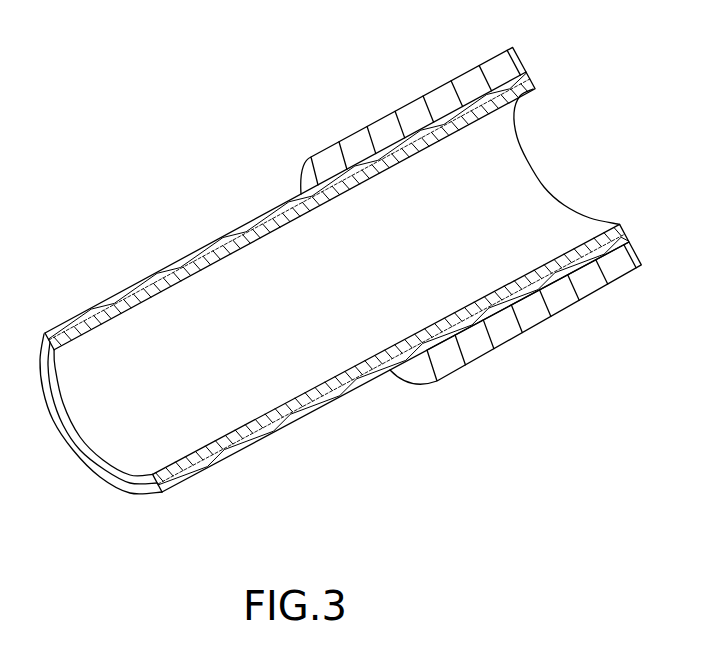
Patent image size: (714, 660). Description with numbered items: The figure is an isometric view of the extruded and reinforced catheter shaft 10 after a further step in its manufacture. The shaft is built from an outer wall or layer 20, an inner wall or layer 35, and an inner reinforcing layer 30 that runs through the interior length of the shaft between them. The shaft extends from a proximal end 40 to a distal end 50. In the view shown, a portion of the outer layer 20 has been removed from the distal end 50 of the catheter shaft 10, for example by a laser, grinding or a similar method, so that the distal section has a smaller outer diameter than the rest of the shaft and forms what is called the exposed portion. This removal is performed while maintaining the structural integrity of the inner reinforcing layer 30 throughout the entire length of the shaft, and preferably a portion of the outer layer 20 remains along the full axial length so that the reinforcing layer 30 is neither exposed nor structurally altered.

The catheter shaft 10 is at (260, 54).
The outer wall or layer 20 is at (515, 50).
The inner reinforcing layer 30 is at (535, 83).
The inner wall or layer 35 is at (432, 139).
The proximal end 40 is at (581, 179).
The distal end 50 is at (52, 457).